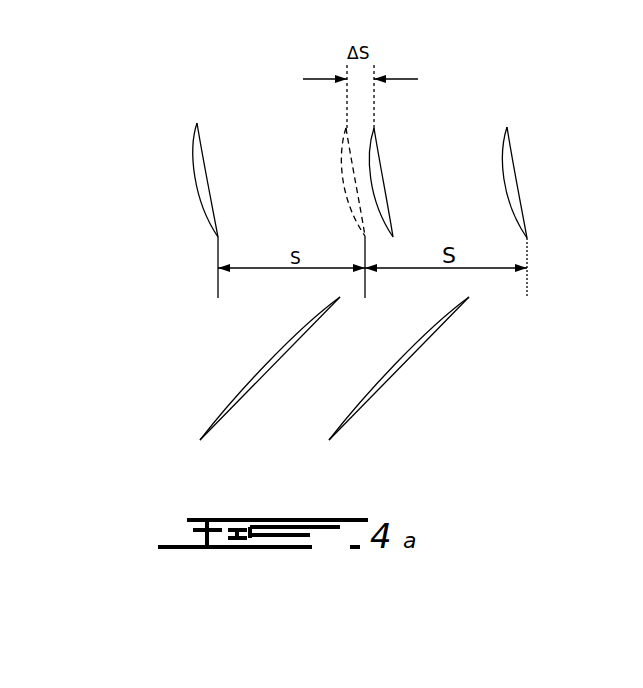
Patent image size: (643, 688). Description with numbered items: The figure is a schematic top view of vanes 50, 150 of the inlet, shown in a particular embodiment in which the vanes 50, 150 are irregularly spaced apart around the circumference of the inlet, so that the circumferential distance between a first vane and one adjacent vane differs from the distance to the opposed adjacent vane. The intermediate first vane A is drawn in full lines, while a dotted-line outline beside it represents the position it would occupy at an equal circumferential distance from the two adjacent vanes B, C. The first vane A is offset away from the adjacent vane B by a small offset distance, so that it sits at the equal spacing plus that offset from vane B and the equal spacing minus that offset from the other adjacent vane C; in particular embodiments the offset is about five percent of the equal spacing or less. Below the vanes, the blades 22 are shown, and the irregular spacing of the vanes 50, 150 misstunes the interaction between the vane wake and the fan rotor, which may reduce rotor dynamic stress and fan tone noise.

The vane 50 is at (149, 157).
The vane 150 is at (149, 157).
The rotor blade 22 is at (226, 394).
The first vane A is at (378, 126).
The adjacent vane B is at (201, 121).
The adjacent vane C is at (511, 124).